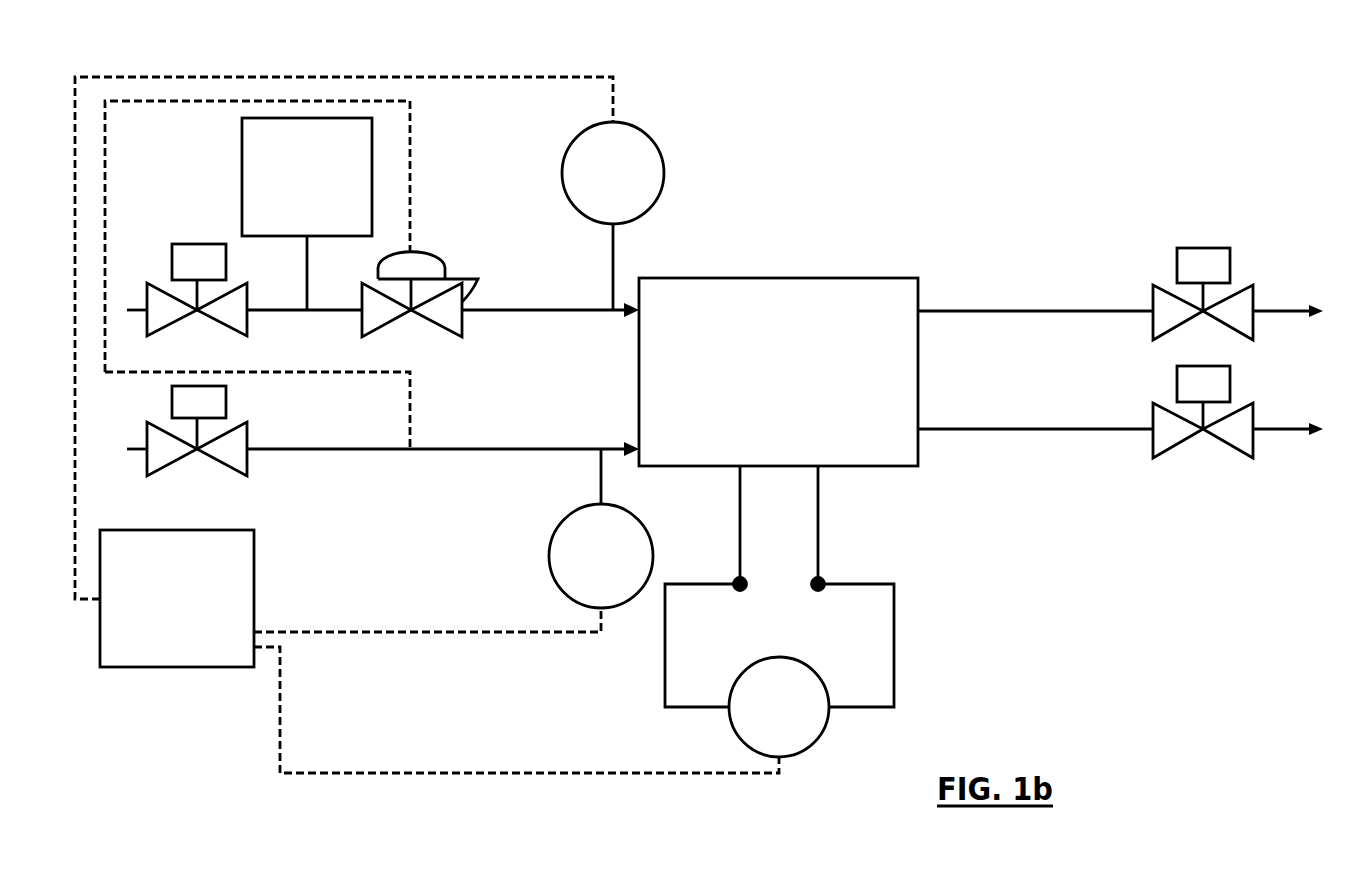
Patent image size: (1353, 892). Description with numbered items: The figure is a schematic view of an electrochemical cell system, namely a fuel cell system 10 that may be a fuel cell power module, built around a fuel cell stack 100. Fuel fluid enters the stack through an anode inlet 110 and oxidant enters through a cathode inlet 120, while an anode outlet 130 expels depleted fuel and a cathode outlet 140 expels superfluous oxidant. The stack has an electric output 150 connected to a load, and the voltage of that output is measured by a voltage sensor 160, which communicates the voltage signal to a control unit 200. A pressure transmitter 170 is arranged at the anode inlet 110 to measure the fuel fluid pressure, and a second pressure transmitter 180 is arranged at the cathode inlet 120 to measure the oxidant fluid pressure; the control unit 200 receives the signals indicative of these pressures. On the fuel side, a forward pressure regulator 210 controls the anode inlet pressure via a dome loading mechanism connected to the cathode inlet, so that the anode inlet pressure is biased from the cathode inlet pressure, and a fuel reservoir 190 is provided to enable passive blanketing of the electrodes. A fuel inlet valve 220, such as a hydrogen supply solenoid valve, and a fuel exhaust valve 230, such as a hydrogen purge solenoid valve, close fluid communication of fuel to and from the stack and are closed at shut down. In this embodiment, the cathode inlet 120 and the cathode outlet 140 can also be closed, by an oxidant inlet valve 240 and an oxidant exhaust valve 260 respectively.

The fuel cell system 10 is at (908, 147).
The fuel cell stack 100 is at (753, 379).
The anode inlet 110 is at (565, 310).
The cathode inlet 120 is at (567, 449).
The anode outlet 130 is at (981, 311).
The cathode outlet 140 is at (975, 429).
The electric output 150 is at (816, 580).
The voltage sensor 160 is at (757, 715).
The pressure transmitter 170 is at (591, 183).
The pressure transmitter 180 is at (579, 570).
The fuel reservoir 190 is at (285, 189).
The control unit 200 is at (156, 610).
The forward pressure regulator 210 is at (385, 318).
The fuel inlet valve 220 is at (237, 323).
The fuel exhaust valve 230 is at (1238, 335).
The oxidant inlet valve 240 is at (235, 462).
The oxidant exhaust valve 260 is at (1238, 452).